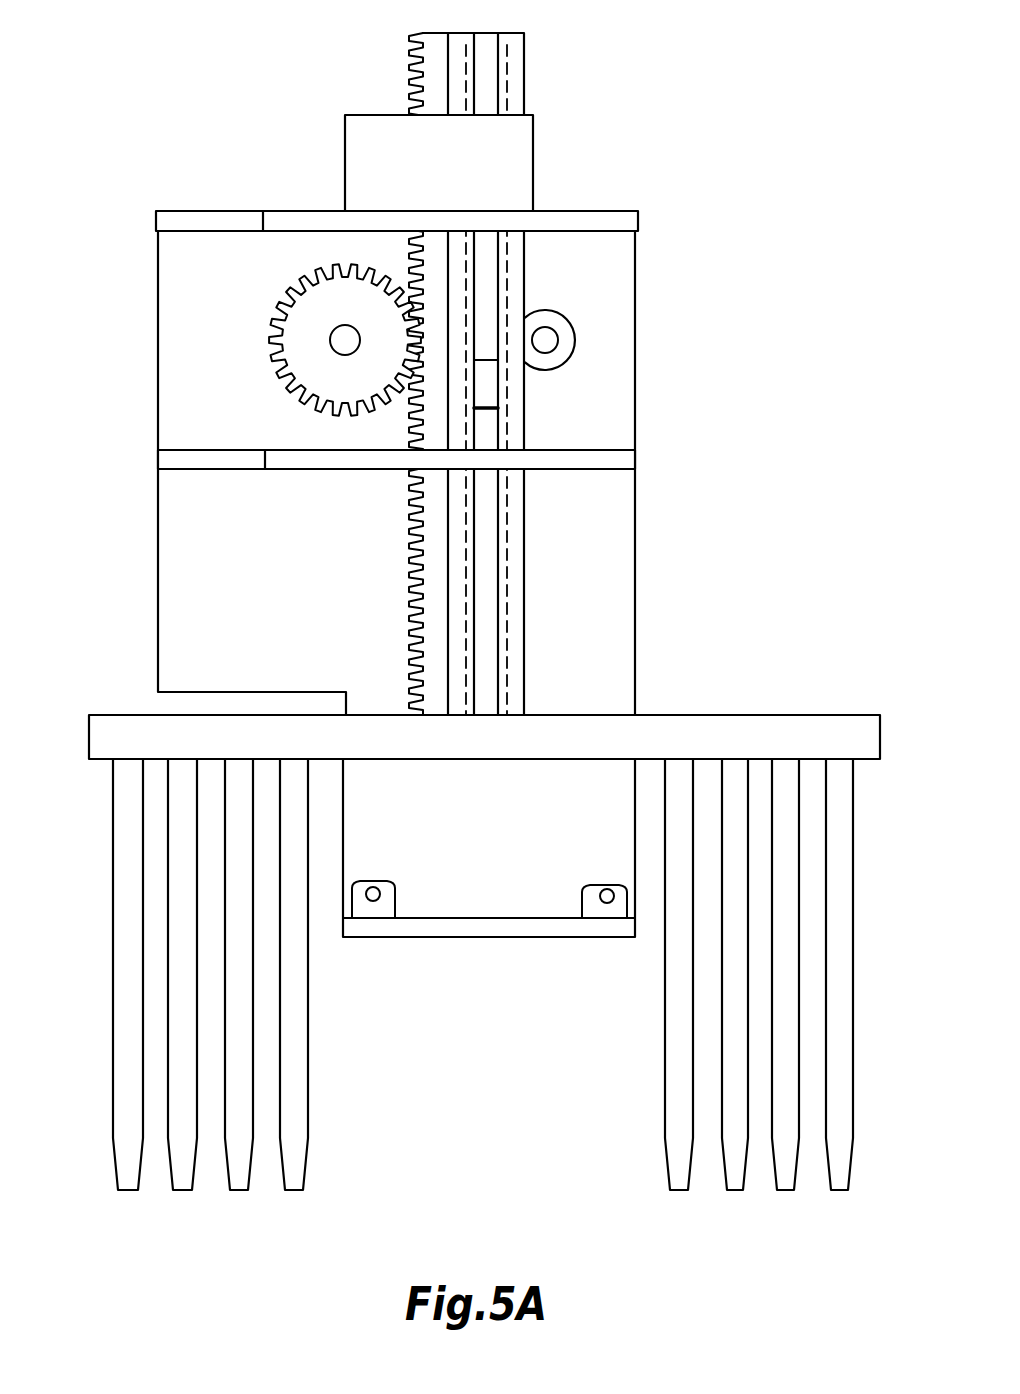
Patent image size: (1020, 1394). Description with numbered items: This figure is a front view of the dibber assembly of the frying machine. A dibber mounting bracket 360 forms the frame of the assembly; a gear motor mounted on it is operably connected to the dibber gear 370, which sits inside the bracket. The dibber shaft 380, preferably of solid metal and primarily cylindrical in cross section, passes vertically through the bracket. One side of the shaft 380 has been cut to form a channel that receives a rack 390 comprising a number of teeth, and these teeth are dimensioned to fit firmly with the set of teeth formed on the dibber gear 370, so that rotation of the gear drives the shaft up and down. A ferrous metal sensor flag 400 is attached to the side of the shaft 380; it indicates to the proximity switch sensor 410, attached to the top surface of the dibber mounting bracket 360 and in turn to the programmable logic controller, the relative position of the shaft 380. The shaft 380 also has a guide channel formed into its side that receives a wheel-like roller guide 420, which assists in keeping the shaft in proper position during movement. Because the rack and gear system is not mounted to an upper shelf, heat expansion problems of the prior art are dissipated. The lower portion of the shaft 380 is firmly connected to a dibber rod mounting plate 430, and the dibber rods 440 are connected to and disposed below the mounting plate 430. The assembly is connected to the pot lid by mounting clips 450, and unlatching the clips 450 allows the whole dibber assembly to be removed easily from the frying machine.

The dibber mounting bracket 360 is at (247, 562).
The dibber gear 370 is at (300, 366).
The dibber shaft 380 is at (518, 70).
The rack 390 is at (417, 62).
The sensor flag 400 is at (483, 387).
The proximity switch sensor 410 is at (498, 160).
The roller guide 420 is at (572, 340).
The dibber rod mounting plate 430 is at (160, 735).
The dibber rods 440 is at (122, 982).
The mounting clips 450 is at (385, 901).